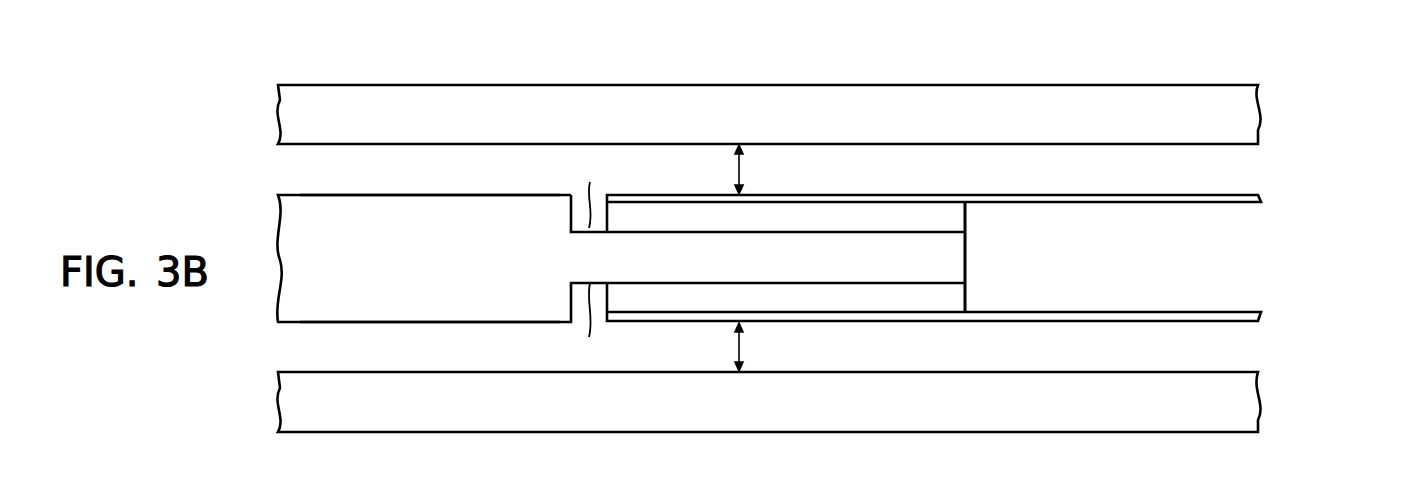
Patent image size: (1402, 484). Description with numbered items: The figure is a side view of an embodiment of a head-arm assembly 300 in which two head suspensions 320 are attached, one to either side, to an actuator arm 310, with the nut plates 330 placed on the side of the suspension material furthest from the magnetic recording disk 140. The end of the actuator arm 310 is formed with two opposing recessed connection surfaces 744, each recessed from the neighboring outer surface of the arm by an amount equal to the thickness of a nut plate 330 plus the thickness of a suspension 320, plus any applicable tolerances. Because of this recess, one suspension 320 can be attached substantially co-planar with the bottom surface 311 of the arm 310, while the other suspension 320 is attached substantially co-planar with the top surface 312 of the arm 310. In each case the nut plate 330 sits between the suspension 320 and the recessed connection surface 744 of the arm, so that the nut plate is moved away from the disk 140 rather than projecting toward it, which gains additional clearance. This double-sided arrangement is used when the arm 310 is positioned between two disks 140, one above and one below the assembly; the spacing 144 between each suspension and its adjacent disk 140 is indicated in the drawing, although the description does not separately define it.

The head-arm assembly 300 is at (1298, 60).
The magnetic recording disk 140 is at (1068, 119).
The spacing between slider and disk 144 is at (745, 168).
The actuator arm 310 is at (412, 264).
The bottom surface of arm 311 is at (372, 324).
The top surface of arm 312 is at (373, 194).
The head suspension 320 is at (1173, 194).
The nut plate 330 is at (966, 212).
The connection surface 744 is at (590, 260).